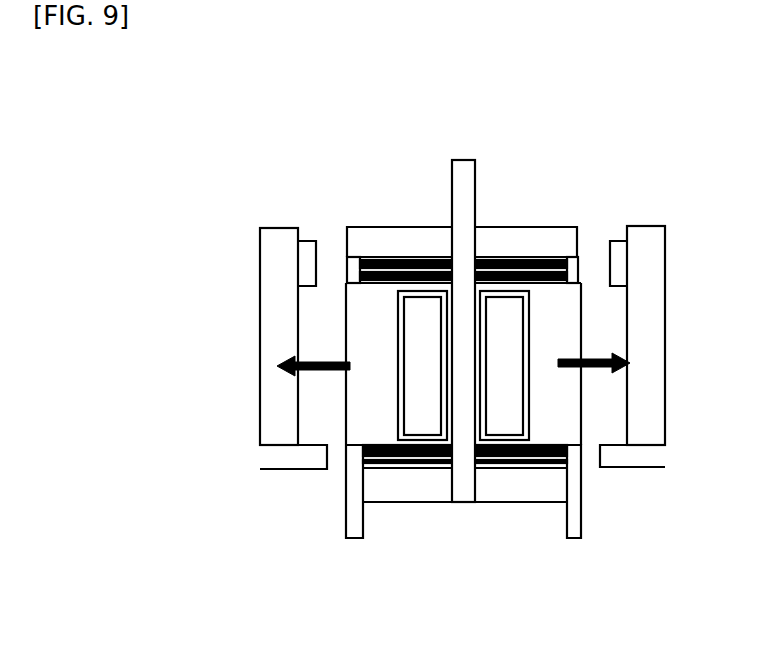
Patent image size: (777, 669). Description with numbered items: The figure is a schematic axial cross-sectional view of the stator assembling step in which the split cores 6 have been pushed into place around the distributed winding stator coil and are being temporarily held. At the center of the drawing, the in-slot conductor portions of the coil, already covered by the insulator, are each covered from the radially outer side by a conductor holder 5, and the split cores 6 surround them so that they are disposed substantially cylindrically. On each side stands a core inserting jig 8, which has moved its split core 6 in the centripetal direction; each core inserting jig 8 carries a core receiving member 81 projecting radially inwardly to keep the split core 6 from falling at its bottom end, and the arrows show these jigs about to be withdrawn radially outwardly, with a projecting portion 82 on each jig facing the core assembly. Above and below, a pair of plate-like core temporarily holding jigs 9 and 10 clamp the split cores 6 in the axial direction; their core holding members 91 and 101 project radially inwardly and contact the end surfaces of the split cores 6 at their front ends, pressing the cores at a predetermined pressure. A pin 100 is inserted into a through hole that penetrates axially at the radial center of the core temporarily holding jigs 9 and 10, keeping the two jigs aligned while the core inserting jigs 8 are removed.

The conductor holder 5 is at (420, 313).
The split core 6 is at (368, 302).
The core inserting jig 8 is at (282, 322).
The core temporarily holding jig 9 is at (537, 238).
The core temporarily holding jig 10 is at (510, 483).
The core receiving member 81 is at (303, 453).
The protrusion 82 is at (615, 263).
The core holding member 91 is at (350, 270).
The pin 100 is at (467, 182).
The core holding member 101 is at (360, 530).